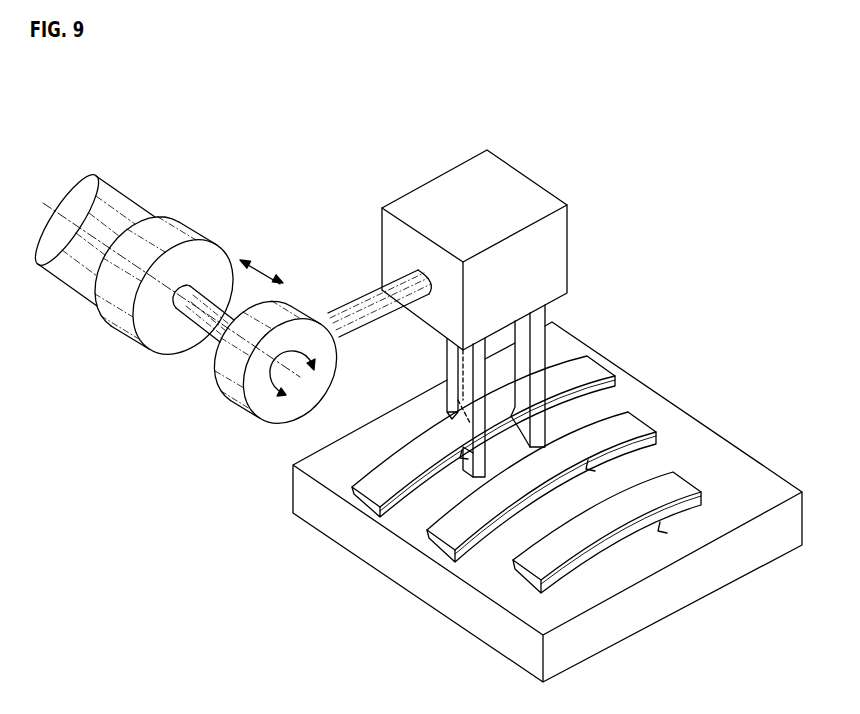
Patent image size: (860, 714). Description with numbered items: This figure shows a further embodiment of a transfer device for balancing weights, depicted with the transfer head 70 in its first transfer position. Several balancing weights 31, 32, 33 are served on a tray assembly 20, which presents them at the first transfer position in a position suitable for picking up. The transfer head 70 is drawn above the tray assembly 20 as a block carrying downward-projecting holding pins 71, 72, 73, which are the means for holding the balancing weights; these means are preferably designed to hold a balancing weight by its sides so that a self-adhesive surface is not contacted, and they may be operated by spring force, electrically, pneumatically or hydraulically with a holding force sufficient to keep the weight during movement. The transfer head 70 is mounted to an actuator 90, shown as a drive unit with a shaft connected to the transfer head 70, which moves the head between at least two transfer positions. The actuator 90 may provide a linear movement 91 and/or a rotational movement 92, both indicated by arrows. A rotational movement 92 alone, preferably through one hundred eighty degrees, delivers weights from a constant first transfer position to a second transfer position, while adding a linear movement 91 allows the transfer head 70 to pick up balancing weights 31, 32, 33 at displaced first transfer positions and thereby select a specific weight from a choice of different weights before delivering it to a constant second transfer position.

The tray assembly 20 is at (385, 624).
The balancing weight 31 is at (584, 371).
The balancing weight 32 is at (628, 434).
The balancing weight 33 is at (677, 490).
The transfer head 70 is at (410, 149).
The holding pin 71 is at (477, 342).
The holding pin 72 is at (537, 318).
The holding pin 73 is at (447, 370).
The actuator 90 is at (180, 157).
The linear movement 91 is at (262, 269).
The rotational movement 92 is at (292, 351).